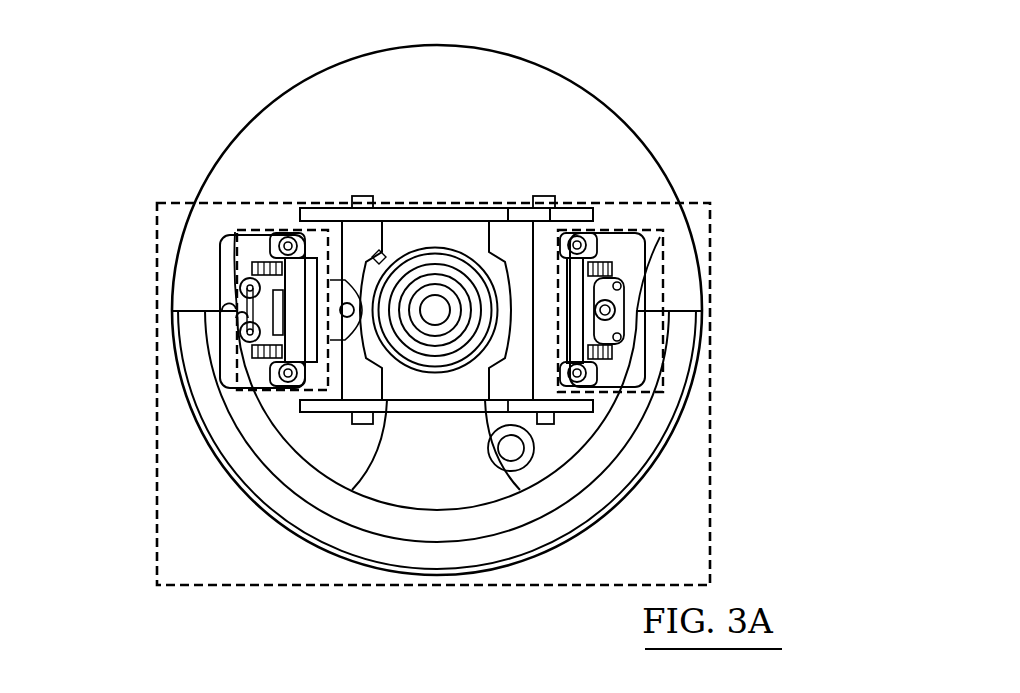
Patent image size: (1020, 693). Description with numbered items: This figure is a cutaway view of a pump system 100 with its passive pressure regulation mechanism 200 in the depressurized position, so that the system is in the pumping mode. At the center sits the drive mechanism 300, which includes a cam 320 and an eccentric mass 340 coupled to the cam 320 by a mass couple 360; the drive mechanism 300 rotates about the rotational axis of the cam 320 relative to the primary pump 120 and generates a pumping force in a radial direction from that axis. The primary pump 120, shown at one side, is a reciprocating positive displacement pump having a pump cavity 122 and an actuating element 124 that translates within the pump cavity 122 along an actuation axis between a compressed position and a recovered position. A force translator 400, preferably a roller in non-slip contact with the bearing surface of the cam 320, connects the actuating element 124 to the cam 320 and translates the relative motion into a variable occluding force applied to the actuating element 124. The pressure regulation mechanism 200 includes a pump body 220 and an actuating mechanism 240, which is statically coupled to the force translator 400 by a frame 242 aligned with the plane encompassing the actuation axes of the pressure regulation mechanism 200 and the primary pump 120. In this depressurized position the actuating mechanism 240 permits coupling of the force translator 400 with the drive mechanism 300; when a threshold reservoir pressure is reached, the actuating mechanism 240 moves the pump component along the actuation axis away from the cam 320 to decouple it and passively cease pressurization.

The pump system 100 is at (745, 112).
The primary pump 120 is at (233, 278).
The pump cavity 122 is at (223, 303).
The actuating element 124 is at (268, 337).
The passive pressure regulation mechanism 200 is at (664, 256).
The pump body 220 is at (620, 240).
The actuating mechanism 240 is at (623, 348).
The frame 242 is at (523, 208).
The drive mechanism 300 is at (712, 348).
The cam 320 is at (480, 262).
The eccentric mass 340 is at (640, 442).
The mass couple 360 is at (392, 476).
The force translator 400 is at (342, 304).